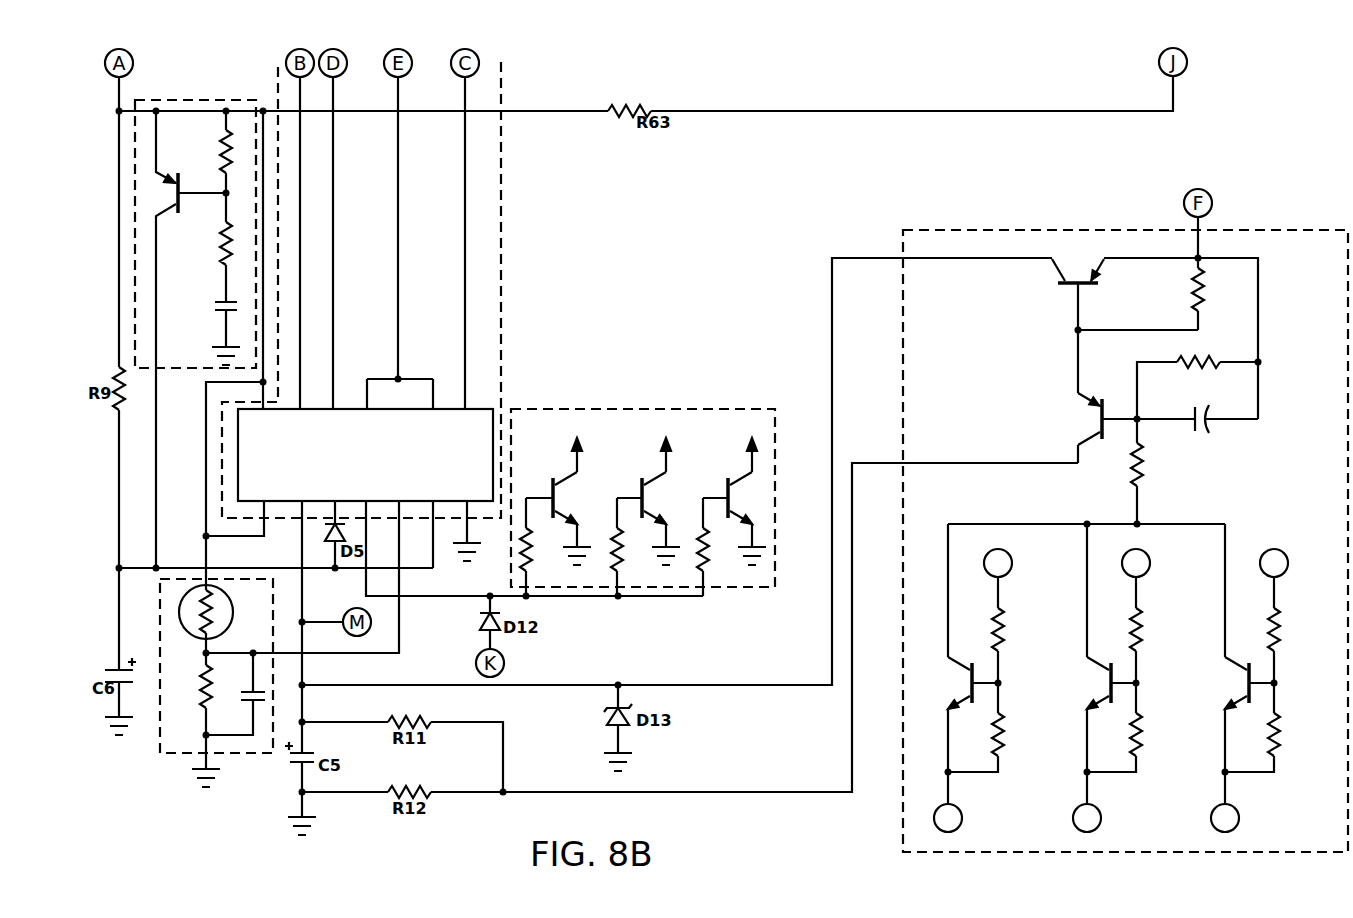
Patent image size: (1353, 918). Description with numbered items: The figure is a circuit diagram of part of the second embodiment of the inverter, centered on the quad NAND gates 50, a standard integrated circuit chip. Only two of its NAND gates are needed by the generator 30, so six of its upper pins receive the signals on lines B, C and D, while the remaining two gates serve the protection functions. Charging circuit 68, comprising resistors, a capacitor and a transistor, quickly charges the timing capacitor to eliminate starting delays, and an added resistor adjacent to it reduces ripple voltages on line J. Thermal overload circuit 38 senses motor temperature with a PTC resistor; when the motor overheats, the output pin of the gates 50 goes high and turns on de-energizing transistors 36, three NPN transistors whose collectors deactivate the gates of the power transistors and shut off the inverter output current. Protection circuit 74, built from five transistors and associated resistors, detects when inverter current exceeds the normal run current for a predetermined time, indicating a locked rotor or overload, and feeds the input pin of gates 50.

The generator 30 is at (395, 272).
The de-energizing transistors 36 is at (628, 404).
The thermal overload circuit 38 is at (164, 758).
The quad NAND gates 50 is at (464, 467).
The charging circuit 68 is at (208, 98).
The protection circuit 74 is at (958, 226).